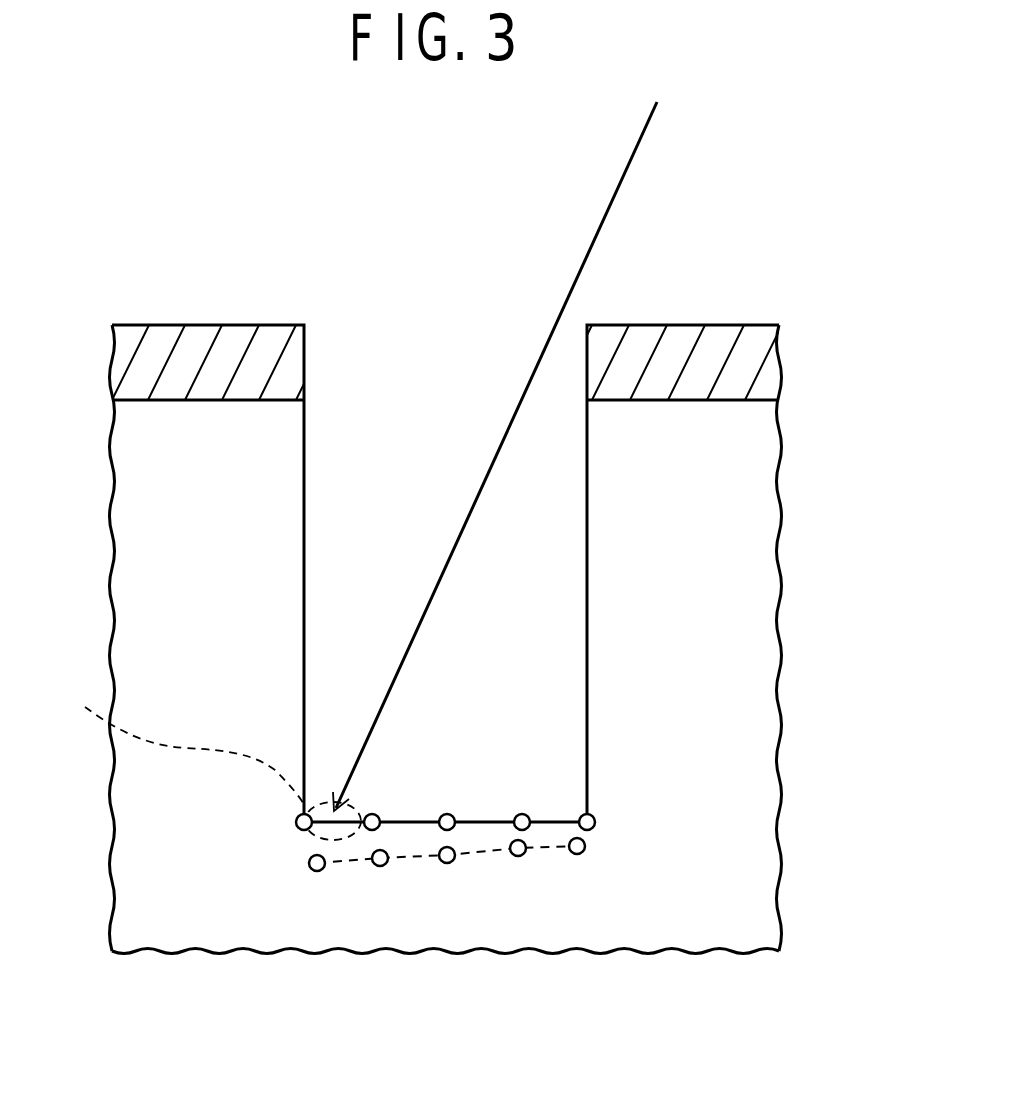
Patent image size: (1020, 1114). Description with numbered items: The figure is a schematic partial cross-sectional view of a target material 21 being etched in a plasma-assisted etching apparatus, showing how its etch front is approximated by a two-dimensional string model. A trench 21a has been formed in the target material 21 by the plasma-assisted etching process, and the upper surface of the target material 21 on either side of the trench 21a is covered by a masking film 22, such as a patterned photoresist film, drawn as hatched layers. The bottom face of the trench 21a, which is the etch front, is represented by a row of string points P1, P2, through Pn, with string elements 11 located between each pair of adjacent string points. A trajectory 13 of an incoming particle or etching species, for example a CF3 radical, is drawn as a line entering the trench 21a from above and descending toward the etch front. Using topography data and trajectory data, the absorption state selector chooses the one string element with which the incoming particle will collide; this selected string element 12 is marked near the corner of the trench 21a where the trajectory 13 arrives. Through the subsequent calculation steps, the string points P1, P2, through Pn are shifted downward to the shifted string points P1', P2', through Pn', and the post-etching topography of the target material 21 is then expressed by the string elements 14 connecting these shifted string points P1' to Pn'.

The string elements 11 is at (481, 812).
The selected string element 12 is at (200, 761).
The trajectory of the incoming particle 13 is at (582, 263).
The string elements between shifted string points 14 is at (487, 868).
The target material 21 is at (756, 533).
The trench 21a is at (377, 417).
The masking film 22 is at (711, 347).
The string point P1 is at (263, 825).
The string point P2 is at (395, 790).
The string point Pn is at (633, 821).
The shifted string point P1' is at (284, 885).
The shifted string point P2' is at (382, 897).
The shifted string point Pn' is at (619, 870).